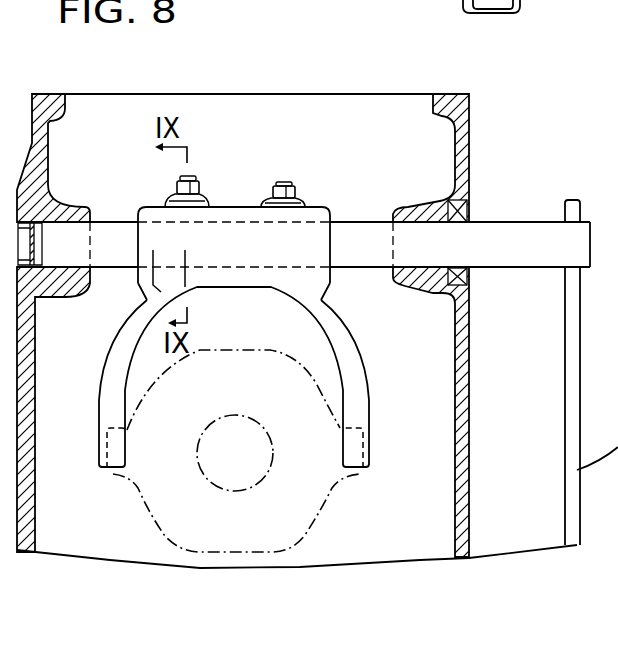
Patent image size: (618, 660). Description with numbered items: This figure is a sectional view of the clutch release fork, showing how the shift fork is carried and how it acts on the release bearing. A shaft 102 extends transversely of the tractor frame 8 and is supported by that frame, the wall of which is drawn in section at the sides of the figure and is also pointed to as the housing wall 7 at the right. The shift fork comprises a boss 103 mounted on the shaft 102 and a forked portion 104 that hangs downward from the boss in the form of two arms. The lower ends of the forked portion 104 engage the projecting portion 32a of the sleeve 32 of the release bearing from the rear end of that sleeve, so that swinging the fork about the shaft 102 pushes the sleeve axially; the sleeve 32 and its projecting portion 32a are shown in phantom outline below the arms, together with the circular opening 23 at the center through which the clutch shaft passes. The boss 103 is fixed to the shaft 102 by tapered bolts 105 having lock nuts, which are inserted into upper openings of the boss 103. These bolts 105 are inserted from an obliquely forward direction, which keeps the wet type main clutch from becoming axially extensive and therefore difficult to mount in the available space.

The clutch housing 7 is at (468, 494).
The tractor frame 8 is at (480, 434).
The input shaft opening 23 is at (258, 480).
The sleeve 32 is at (160, 533).
The projecting portion 32a is at (387, 513).
The shaft 102 is at (543, 230).
The boss 103 is at (312, 218).
The forked portion 104 is at (367, 375).
The tapered bolts 105 is at (288, 183).